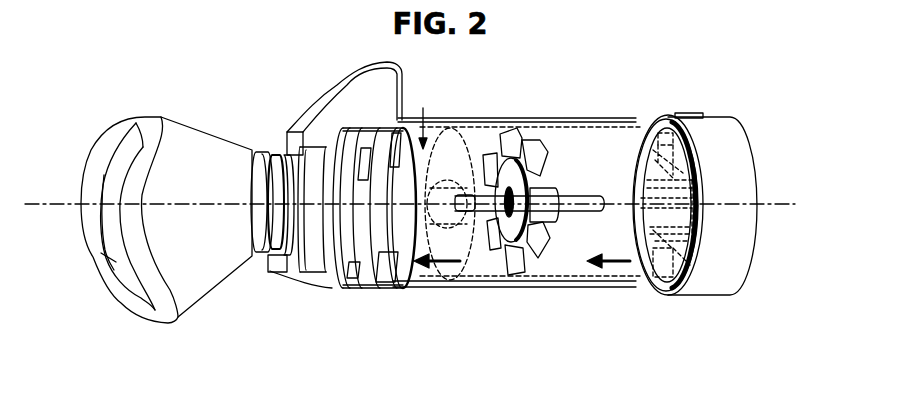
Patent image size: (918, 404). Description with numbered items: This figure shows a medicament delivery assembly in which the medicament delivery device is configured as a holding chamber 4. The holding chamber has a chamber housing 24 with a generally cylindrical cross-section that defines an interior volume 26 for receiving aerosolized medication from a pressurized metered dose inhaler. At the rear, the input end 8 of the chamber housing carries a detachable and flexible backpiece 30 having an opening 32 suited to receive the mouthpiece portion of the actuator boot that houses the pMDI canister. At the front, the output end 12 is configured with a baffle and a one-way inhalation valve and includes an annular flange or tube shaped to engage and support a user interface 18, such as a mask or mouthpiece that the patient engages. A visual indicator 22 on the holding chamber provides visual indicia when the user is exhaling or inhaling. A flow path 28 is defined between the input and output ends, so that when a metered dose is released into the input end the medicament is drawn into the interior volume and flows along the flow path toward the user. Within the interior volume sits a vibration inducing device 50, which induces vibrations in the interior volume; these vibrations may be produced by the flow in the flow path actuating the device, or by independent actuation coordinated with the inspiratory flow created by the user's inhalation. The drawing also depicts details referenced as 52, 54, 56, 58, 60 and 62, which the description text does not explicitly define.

The holding chamber 4 is at (578, 68).
The input end 8 is at (783, 148).
The output end 12 is at (328, 273).
The user interface 18 is at (192, 297).
The visual indicator 22 is at (352, 84).
The chamber housing 24 is at (590, 119).
The interior volume 26 is at (422, 119).
The flow path 28 is at (621, 266).
The backpiece 30 is at (710, 118).
The opening 32 is at (688, 212).
The vibration inducing device 50 is at (514, 205).
The fan blade 52 is at (500, 250).
The central axis 54 is at (789, 209).
The shaft 56 is at (593, 192).
The fan blade 58 is at (511, 268).
The second fan position 60 is at (441, 283).
The hub 62 is at (447, 204).